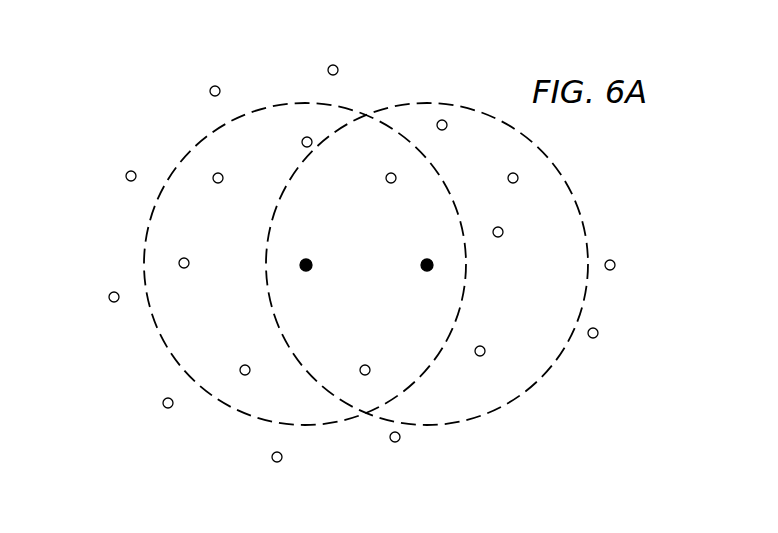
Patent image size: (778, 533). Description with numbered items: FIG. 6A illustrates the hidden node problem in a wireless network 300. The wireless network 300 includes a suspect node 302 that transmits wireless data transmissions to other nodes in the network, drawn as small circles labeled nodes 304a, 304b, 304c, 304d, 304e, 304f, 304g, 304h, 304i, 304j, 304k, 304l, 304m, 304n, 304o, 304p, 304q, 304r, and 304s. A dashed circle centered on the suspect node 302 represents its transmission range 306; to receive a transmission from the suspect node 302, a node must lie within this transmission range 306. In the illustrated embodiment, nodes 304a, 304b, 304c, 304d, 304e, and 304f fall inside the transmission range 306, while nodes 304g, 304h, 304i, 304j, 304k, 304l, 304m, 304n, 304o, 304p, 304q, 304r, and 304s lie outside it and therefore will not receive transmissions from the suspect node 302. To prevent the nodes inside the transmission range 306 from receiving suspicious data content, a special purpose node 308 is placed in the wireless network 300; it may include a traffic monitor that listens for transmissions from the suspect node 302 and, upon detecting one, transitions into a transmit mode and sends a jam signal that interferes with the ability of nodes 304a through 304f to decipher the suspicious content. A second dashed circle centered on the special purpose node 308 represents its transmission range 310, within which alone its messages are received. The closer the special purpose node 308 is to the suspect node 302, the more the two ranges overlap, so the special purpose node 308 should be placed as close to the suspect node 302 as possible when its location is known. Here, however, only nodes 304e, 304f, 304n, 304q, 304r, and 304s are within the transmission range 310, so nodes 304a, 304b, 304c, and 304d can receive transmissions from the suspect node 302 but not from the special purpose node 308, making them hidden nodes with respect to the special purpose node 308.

The wireless network 300 is at (455, 81).
The suspect node 302 is at (308, 271).
The node 304a is at (302, 143).
The node 304b is at (216, 184).
The node 304c is at (188, 268).
The node 304d is at (240, 367).
The node 304e is at (366, 365).
The node 304f is at (386, 180).
The node 304g is at (331, 65).
The node 304h is at (210, 90).
The node 304i is at (126, 175).
The node 304j is at (109, 298).
The node 304k is at (163, 405).
The node 304l is at (275, 462).
The node 304m is at (397, 443).
The node 304n is at (510, 333).
The node 304o is at (598, 336).
The node 304p is at (615, 263).
The node 304q is at (502, 237).
The node 304r is at (517, 183).
The node 304s is at (446, 130).
The transmission range 306 is at (147, 232).
The special purpose node 308 is at (421, 263).
The transmission range 310 is at (573, 192).